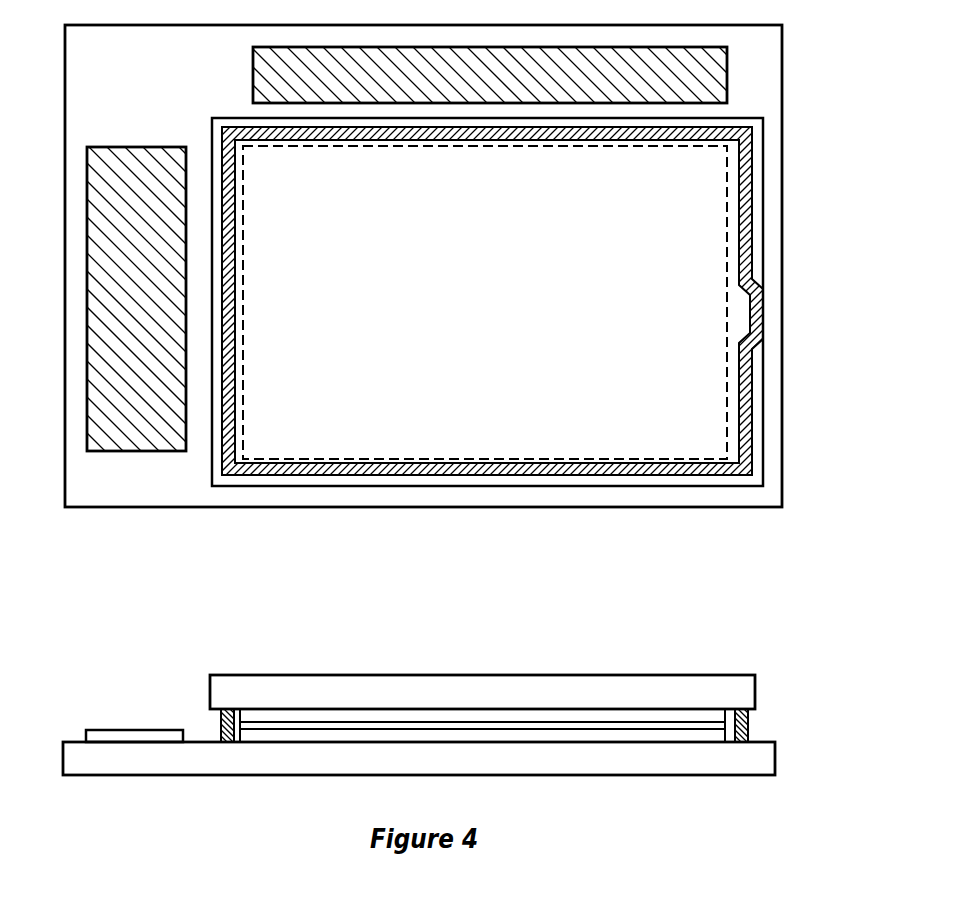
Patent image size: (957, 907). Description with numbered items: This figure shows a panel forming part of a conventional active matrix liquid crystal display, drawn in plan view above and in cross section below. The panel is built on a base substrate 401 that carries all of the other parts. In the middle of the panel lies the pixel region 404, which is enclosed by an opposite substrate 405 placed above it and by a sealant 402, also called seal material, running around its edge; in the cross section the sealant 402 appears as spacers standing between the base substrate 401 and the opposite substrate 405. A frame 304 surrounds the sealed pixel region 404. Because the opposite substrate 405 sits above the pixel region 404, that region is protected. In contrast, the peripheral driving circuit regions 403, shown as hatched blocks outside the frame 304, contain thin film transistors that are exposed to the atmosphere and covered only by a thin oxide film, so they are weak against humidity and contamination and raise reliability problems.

The substrate / base plate 401 is at (138, 64).
The sealant 402 is at (527, 137).
The peripheral driving circuit regions 403 is at (512, 86).
The pixel region 404 is at (508, 313).
The opposite substrate 405 is at (436, 701).
The frame 304 is at (223, 130).